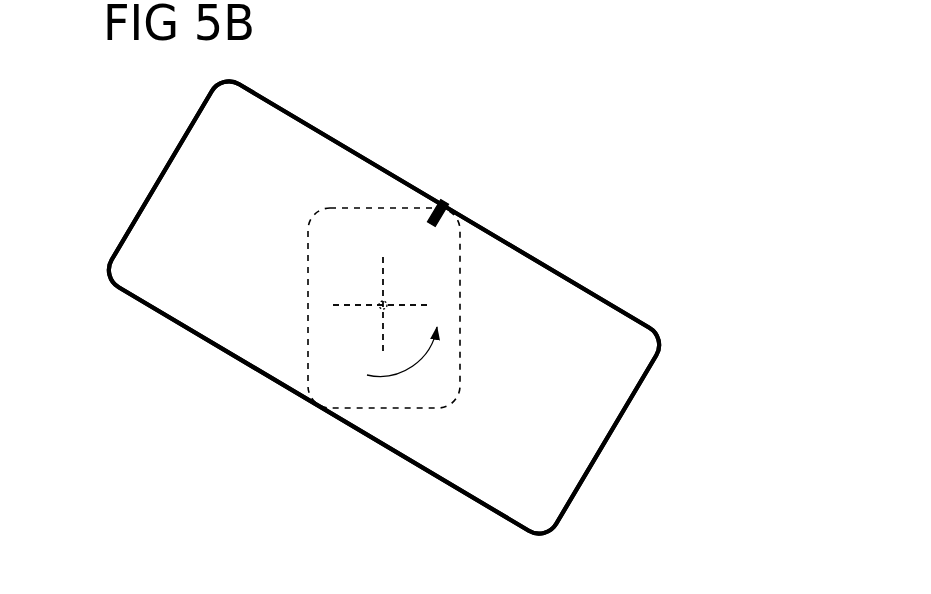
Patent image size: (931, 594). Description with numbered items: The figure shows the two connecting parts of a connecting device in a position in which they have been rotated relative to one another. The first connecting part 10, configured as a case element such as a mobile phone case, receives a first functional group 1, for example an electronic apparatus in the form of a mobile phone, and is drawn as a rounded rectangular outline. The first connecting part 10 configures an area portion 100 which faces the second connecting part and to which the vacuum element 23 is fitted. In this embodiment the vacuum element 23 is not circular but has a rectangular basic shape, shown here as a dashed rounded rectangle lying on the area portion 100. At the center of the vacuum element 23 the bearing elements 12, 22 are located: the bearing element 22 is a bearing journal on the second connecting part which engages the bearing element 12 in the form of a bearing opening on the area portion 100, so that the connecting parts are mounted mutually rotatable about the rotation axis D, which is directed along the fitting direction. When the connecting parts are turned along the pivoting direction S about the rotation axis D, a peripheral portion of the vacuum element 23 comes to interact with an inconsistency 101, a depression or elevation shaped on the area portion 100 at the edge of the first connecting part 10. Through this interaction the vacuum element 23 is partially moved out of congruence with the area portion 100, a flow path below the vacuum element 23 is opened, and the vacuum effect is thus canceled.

The first functional group 1 is at (606, 284).
The area portion 100 is at (711, 317).
The first connecting part 10 is at (539, 250).
The inconsistency 101 is at (444, 203).
The vacuum element 23 is at (380, 205).
The bearing element 12 is at (311, 346).
The bearing element 22 is at (381, 304).
The rotation axis D is at (417, 261).
The pivoting direction S is at (402, 360).